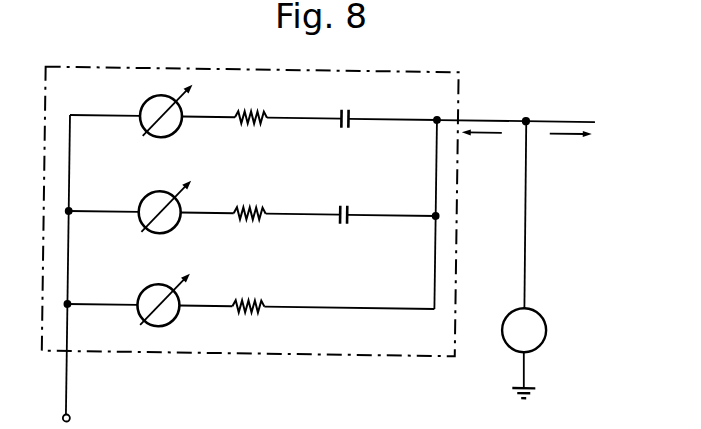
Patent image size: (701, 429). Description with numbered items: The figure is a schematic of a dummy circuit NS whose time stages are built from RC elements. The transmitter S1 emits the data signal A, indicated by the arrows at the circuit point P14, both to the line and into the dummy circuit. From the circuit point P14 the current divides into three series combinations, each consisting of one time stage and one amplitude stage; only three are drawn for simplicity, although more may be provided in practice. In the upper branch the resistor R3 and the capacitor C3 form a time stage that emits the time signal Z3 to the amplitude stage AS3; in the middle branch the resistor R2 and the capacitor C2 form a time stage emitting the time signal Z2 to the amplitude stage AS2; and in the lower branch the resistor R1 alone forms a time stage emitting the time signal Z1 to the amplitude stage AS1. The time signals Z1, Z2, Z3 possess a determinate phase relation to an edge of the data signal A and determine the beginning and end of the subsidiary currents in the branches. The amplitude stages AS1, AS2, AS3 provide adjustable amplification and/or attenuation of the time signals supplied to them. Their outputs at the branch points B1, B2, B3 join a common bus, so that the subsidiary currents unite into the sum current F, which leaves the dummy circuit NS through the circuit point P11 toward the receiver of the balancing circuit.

The network (matching/filter network enclosed by dash-dot box) NS is at (98, 62).
The branch input terminal 3 B3 is at (105, 101).
The branch input terminal 2 B2 is at (104, 197).
The branch input terminal 1 B1 is at (102, 291).
The amplitude stage AS3 is at (155, 105).
The amplitude stage AS2 is at (164, 199).
The amplitude stage AS1 is at (163, 291).
The time signal Z3 is at (208, 104).
The time signal Z2 is at (207, 201).
The time signal Z1 is at (205, 293).
The resistor R3 is at (251, 103).
The resistor R2 is at (250, 203).
The resistor R1 is at (248, 294).
The capacitor C3 is at (343, 105).
The capacitor C2 is at (343, 203).
The circuit point P14 is at (517, 108).
The circuit point P11 is at (80, 413).
The sum current F is at (59, 383).
The transmitter S1 is at (525, 260).
The data signal A is at (527, 140).